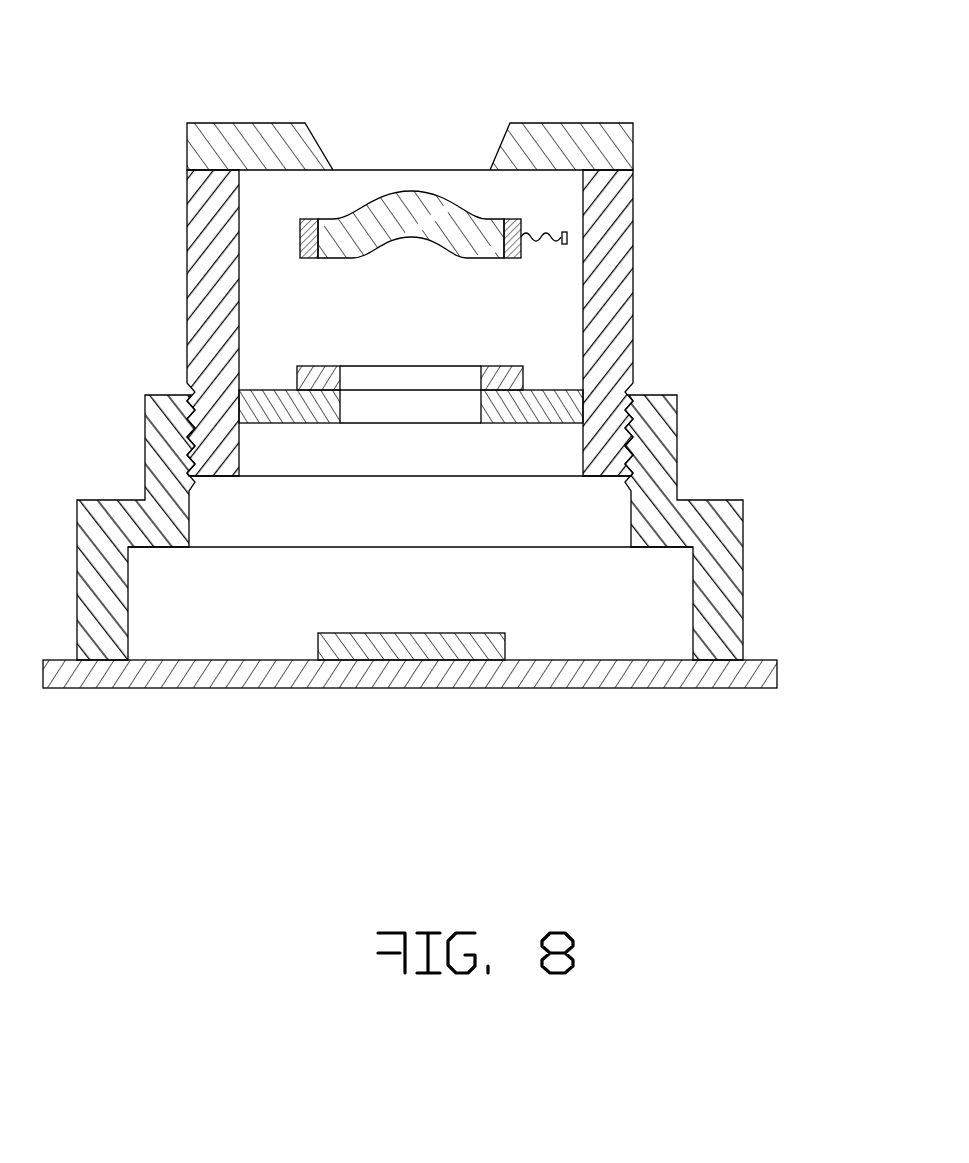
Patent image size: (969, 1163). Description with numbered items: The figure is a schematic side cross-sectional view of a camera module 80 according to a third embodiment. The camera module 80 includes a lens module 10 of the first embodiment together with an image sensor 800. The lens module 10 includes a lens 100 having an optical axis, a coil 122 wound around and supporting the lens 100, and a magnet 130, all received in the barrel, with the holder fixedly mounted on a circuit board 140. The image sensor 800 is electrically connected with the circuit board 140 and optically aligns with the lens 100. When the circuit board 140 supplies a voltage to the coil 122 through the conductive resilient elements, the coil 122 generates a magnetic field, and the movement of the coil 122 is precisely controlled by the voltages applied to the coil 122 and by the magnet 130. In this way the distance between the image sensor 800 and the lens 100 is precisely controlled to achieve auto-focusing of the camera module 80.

The camera module 80 is at (455, 48).
The lens module 10 is at (661, 199).
The lens 100 is at (425, 217).
The coil 122 is at (553, 238).
The magnet 130 is at (508, 377).
The circuit board 140 is at (758, 672).
The image sensor 800 is at (442, 643).